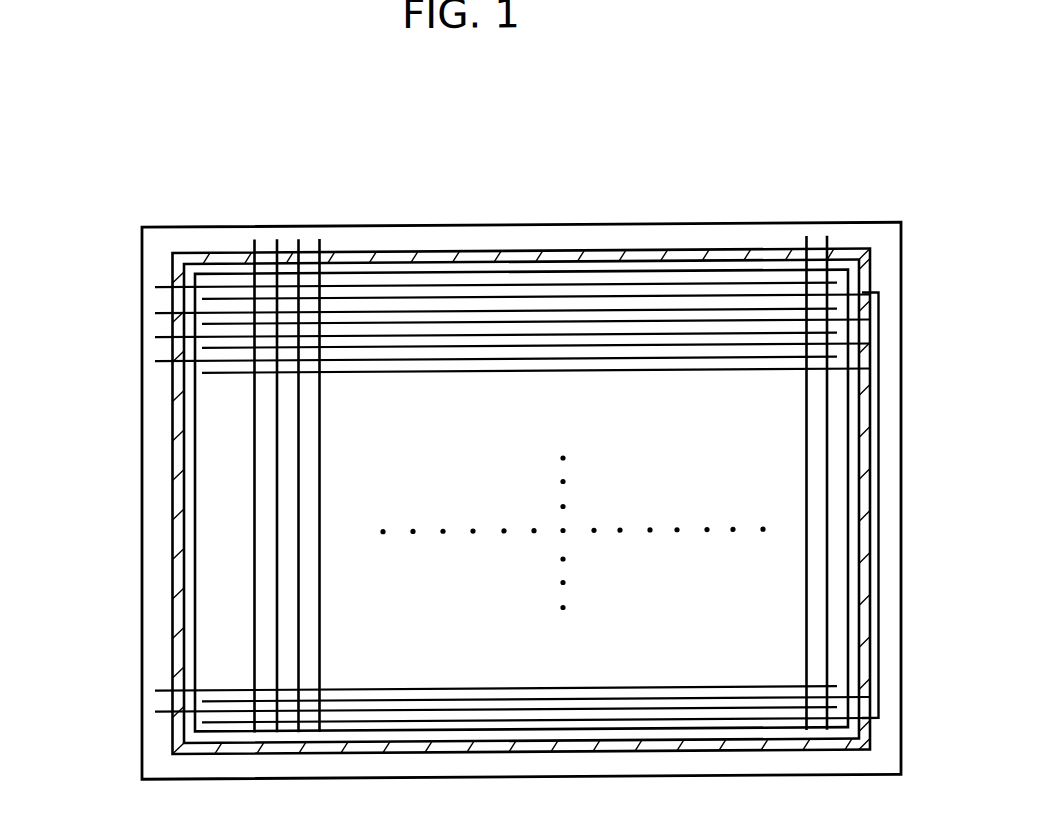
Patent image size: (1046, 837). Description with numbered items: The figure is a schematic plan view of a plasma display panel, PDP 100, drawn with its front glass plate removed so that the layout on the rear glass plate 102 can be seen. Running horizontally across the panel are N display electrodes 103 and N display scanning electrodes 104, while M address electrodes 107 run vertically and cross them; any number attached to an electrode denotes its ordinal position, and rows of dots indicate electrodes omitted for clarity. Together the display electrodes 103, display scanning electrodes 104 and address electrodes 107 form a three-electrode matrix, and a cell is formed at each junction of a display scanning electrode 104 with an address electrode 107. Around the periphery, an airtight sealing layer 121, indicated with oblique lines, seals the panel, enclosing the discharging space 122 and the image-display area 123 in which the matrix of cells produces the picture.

The PDP 100 is at (551, 462).
The rear glass plate 102 is at (862, 226).
The display electrode 103 is at (215, 373).
The display scanning electrode 104 is at (455, 482).
The address electrode 107 is at (504, 423).
The airtight sealing layer 121 is at (508, 260).
The discharging space 122 is at (620, 408).
The image-display area 123 is at (195, 515).